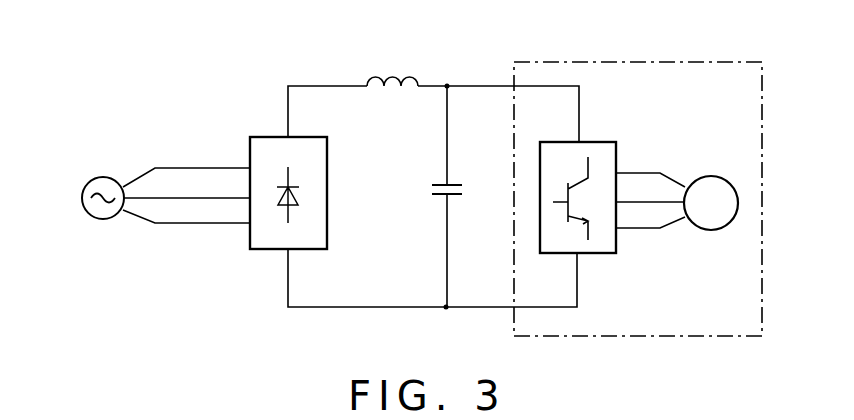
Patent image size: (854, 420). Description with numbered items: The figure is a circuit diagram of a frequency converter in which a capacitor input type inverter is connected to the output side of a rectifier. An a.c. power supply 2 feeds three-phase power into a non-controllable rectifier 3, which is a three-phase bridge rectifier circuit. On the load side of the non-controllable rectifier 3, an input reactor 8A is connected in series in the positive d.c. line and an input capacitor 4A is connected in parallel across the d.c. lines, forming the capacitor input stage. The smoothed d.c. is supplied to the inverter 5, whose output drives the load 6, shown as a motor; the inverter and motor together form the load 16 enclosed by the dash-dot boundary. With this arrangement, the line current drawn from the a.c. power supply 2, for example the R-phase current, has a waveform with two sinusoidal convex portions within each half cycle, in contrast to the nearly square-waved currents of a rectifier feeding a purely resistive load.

The a.c. power supply 2 is at (105, 177).
The non-controllable rectifier 3 is at (267, 137).
The input reactor 8A is at (405, 77).
The input capacitor 4A is at (462, 193).
The inverter 5 is at (603, 141).
The load 6 is at (712, 176).
The load 16 is at (694, 62).